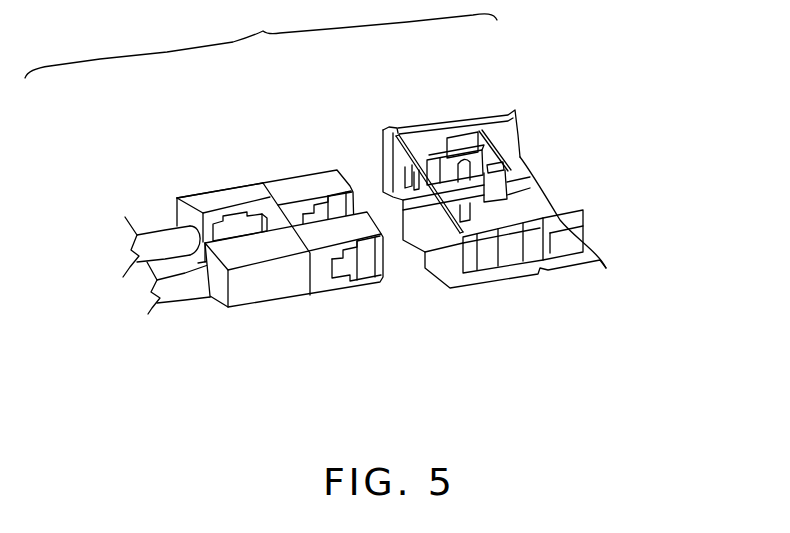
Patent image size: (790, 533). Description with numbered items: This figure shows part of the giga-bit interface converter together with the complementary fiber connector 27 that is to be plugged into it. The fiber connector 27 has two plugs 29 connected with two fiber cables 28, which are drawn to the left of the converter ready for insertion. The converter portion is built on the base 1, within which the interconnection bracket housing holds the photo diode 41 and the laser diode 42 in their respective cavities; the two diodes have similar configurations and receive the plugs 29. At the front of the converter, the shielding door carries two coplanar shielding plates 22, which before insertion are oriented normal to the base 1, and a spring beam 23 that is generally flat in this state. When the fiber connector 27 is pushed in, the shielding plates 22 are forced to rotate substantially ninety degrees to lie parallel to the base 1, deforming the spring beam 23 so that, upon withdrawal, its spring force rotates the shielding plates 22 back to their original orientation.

The base 1 is at (515, 208).
The shielding plates 22 is at (424, 236).
The spring beam 23 is at (454, 147).
The fiber connector 27 is at (222, 188).
The fiber cables 28 is at (153, 228).
The plugs 29 is at (302, 181).
The photo diode 41 is at (473, 140).
The laser diode 42 is at (512, 175).